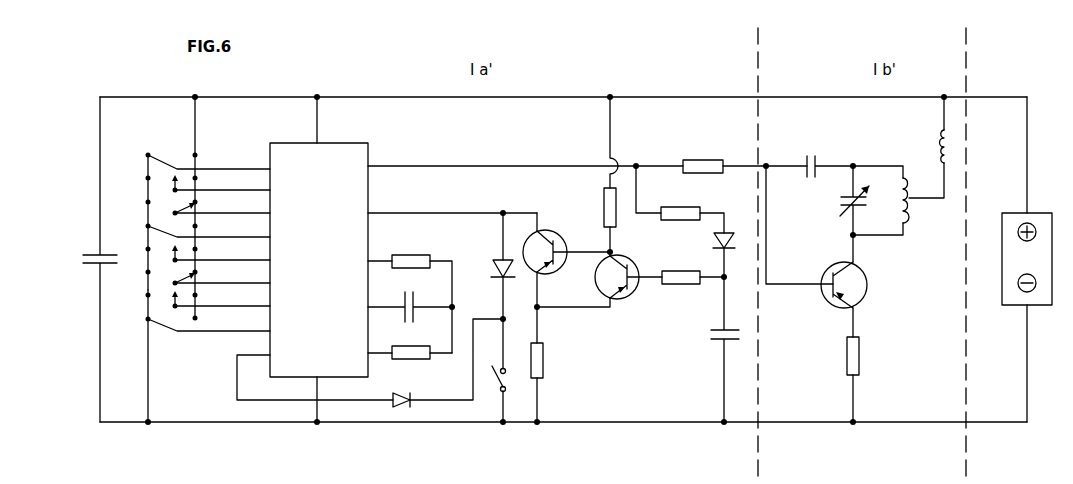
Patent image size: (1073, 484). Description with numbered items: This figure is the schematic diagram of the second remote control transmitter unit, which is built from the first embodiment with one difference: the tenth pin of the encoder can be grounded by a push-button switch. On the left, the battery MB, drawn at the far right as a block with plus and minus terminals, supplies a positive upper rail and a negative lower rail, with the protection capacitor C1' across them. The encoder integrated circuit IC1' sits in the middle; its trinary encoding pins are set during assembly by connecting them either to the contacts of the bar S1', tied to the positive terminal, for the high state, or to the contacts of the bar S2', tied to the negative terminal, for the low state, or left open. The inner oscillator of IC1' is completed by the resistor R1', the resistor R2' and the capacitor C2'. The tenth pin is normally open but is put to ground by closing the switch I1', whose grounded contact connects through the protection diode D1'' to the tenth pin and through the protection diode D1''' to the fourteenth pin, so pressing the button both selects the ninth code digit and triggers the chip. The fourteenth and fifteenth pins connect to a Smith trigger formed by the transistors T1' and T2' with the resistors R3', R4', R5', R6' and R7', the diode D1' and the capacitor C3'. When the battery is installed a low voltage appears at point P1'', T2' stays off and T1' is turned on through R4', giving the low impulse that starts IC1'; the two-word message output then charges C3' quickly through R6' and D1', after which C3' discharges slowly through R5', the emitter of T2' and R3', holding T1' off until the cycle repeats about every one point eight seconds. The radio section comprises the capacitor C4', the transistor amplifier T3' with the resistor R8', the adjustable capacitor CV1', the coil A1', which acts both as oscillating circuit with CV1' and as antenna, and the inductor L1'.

The protection capacitor C1' is at (90, 259).
The contact bar S1' is at (233, 207).
The contact bar S2' is at (207, 357).
The integrated circuit IC1' is at (319, 261).
The resistor R1' is at (410, 364).
The resistor R2' is at (410, 292).
The capacitor C2' is at (430, 306).
The protection diode D1'' is at (370, 371).
The protection diode D1''' is at (452, 266).
The switch I1' is at (492, 372).
The transistor T1' is at (566, 246).
The transistor T2' is at (599, 290).
The resistor R3' is at (557, 364).
The resistor R4' is at (595, 175).
The resistor R5' is at (694, 268).
The resistor R6' is at (680, 199).
The resistor R7' is at (587, 155).
The diode D1' is at (726, 232).
The point P1'' is at (784, 223).
The capacitor C3' is at (716, 351).
The capacitor C4' is at (828, 152).
The adjustable capacitor CV1' is at (826, 200).
The inductor L1' is at (928, 146).
The coil A1' is at (899, 200).
The transistor amplifier T3' is at (864, 271).
The resistor R8' is at (829, 366).
The battery MB is at (1027, 259).